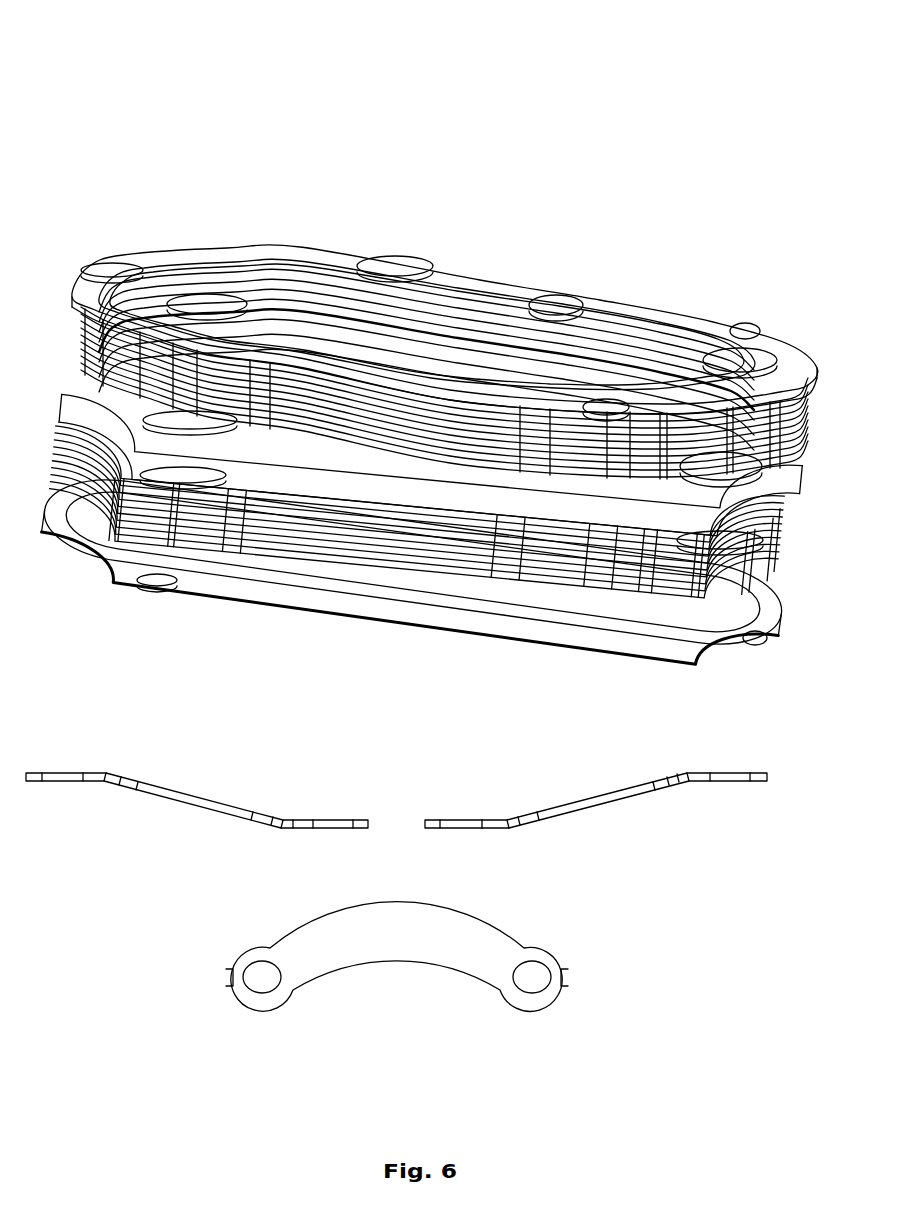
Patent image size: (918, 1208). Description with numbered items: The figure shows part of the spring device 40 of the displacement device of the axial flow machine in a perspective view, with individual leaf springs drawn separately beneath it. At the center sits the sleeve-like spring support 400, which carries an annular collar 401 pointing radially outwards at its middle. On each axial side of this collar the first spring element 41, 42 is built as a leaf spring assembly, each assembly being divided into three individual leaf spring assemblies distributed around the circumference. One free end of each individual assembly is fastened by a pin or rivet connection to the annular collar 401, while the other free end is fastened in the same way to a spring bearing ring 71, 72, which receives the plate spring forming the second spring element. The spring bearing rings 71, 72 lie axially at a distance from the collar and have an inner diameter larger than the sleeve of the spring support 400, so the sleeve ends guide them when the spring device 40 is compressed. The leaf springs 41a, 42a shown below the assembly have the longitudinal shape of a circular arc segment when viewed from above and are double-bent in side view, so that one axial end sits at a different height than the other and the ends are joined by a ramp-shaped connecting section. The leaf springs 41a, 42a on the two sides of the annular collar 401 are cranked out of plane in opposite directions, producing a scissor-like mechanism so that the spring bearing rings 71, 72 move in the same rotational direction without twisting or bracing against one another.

The spring device 40 is at (510, 150).
The first spring element 41 is at (300, 548).
The leaf spring 41a is at (188, 802).
The first spring element 42 is at (300, 387).
The leaf spring 42a is at (598, 797).
The spring bearing ring 71 is at (386, 613).
The spring bearing ring 72 is at (512, 296).
The spring support 400 is at (418, 567).
The annular collar 401 is at (494, 503).